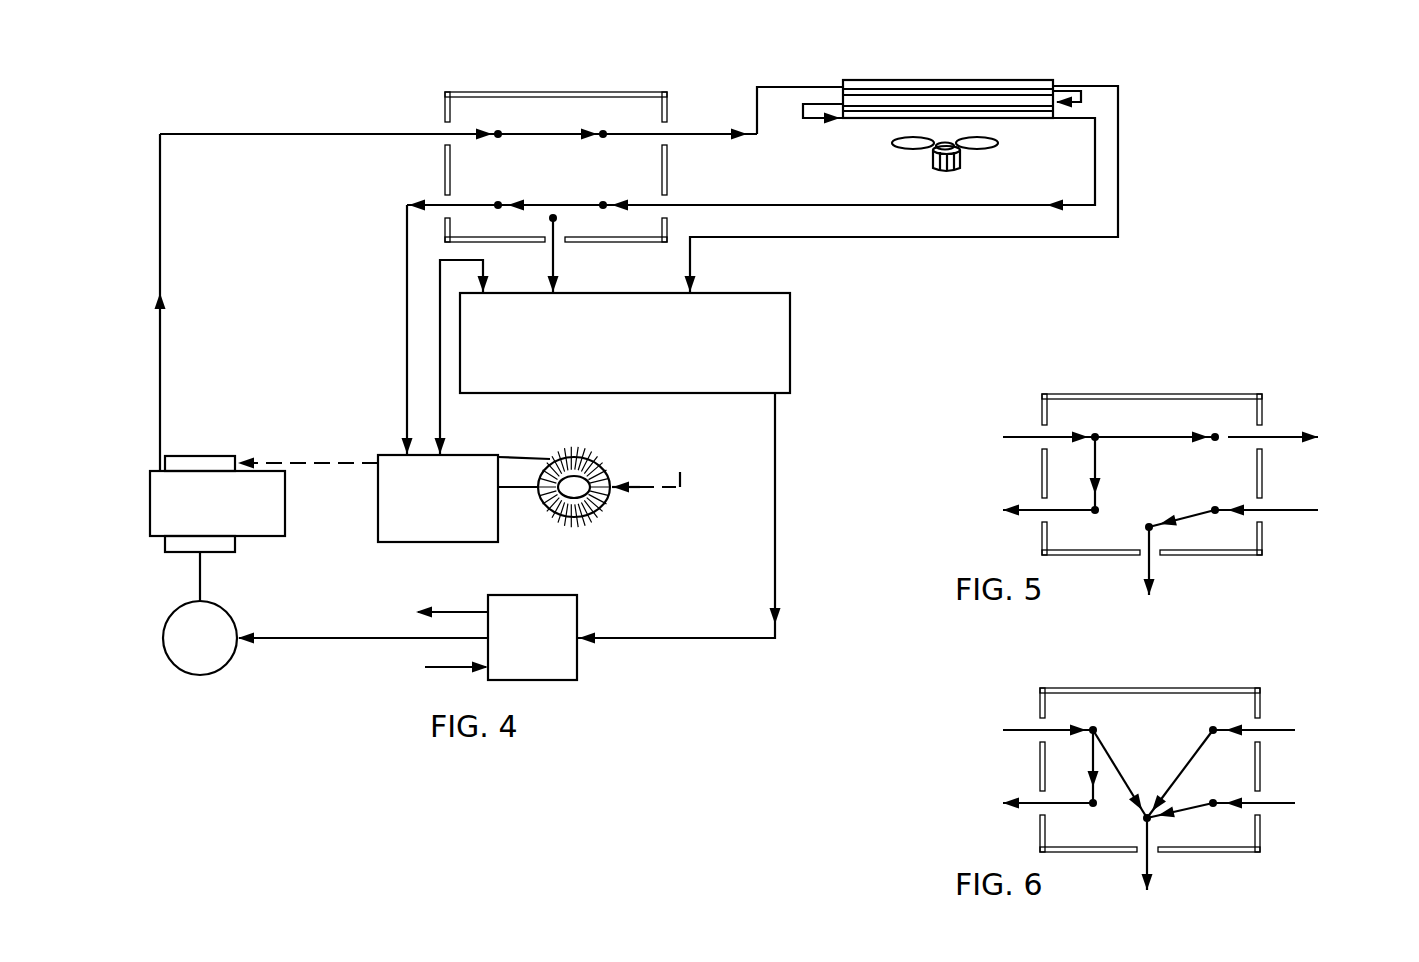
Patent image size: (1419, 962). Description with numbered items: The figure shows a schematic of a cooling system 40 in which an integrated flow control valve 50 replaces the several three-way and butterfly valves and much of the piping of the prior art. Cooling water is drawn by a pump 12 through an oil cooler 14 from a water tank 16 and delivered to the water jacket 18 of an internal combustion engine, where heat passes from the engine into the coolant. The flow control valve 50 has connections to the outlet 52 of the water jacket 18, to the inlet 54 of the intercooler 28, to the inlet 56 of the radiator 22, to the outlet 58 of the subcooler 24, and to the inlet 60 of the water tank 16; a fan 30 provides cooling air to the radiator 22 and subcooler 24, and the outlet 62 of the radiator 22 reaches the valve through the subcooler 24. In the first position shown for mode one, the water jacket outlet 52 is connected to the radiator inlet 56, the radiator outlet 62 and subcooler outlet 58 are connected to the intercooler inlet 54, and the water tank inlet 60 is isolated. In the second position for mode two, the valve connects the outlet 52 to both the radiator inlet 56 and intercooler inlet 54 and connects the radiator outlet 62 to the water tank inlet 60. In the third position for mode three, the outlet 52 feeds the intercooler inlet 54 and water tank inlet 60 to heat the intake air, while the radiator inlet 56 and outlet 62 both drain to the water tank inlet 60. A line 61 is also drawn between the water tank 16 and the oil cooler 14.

In FIG. 4, the pump 12 is at (215, 650).
In FIG. 4, the oil cooler 14 is at (548, 650).
In FIG. 4, the water tank 16 is at (635, 355).
In FIG. 4, the water jacket 18 is at (230, 515).
In FIG. 4, the radiator 22 is at (905, 78).
In FIG. 4, the subcooler 24 is at (857, 120).
In FIG. 4, the intercooler 28 is at (450, 505).
In FIG. 4, the fan 30 is at (958, 160).
In FIG. 4, the cooling system 40 is at (270, 115).
In FIG. 4, the flow control valve 50 is at (445, 96).
In FIG. 5, the flow control valve 50 is at (1262, 473).
In FIG. 6, the flow control valve 50 is at (1260, 765).
In FIG. 4, the outlet of engine water jacket 52 is at (160, 470).
In FIG. 5, the outlet of engine water jacket 52 is at (1015, 436).
In FIG. 6, the outlet of engine water jacket 52 is at (1015, 729).
In FIG. 4, the inlet of intercooler 54 is at (405, 440).
In FIG. 5, the inlet of intercooler 54 is at (1022, 507).
In FIG. 6, the inlet of intercooler 54 is at (1022, 801).
In FIG. 4, the inlet of radiator 56 is at (843, 83).
In FIG. 5, the inlet of radiator 56 is at (1298, 432).
In FIG. 6, the inlet of radiator 56 is at (1282, 728).
In FIG. 4, the outlet of subcooler 58 is at (1081, 117).
In FIG. 5, the outlet of subcooler 58 is at (1290, 515).
In FIG. 6, the outlet of subcooler 58 is at (1290, 805).
In FIG. 4, the inlet of water tank 60 is at (556, 270).
In FIG. 5, the inlet of water tank 60 is at (1153, 565).
In FIG. 6, the inlet of water tank 60 is at (1151, 857).
In FIG. 4, the oil cooler coolant line 61 is at (775, 490).
In FIG. 4, the outlet of radiator 62 is at (1060, 86).
In FIG. 5, the outlet of radiator 62 is at (1290, 515).
In FIG. 6, the outlet of radiator 62 is at (1290, 805).